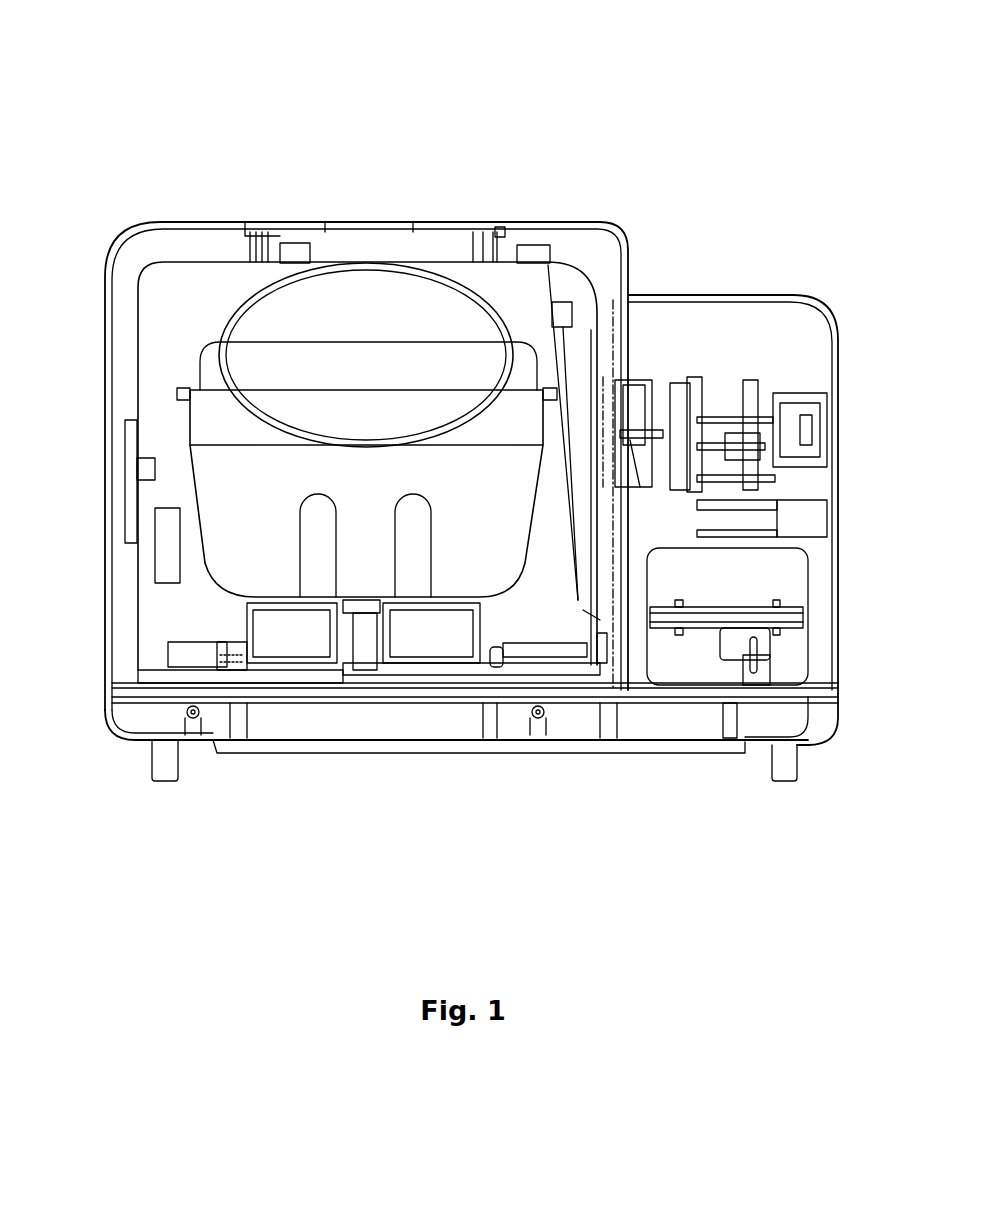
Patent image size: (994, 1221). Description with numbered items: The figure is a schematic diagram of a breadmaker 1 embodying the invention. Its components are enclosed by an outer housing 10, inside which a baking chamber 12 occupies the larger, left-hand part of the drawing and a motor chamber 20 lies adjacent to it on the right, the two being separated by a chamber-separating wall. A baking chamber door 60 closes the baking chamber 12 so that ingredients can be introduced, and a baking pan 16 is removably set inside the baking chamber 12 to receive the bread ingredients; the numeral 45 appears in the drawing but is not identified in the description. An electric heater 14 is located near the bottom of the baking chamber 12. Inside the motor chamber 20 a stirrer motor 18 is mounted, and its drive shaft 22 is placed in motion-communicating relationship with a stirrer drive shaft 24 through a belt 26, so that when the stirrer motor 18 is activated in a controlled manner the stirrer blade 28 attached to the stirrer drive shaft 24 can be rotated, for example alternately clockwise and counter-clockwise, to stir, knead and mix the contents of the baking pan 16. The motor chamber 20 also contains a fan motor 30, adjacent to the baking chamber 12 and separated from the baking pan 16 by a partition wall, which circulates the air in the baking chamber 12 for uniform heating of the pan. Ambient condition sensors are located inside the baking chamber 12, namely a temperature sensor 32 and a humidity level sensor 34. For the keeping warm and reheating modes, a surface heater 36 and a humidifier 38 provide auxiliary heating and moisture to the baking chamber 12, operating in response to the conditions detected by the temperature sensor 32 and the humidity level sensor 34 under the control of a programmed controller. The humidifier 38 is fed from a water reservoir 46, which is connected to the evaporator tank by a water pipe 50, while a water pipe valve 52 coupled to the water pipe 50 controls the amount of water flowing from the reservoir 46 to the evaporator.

The breadmaker 1 is at (688, 90).
The outer housing 10 is at (628, 228).
The baking chamber 12 is at (160, 265).
The electric heater 14 is at (540, 657).
The baking pan 16 is at (217, 587).
The stirrer motor 18 is at (803, 613).
The motor chamber 20 is at (828, 562).
The drive shaft 22 is at (743, 718).
The stirrer drive shaft 24 is at (335, 680).
The belt 26 is at (513, 723).
The stirrer blade 28 is at (305, 533).
The fan motor 30 is at (712, 383).
The temperature sensor 32 is at (145, 473).
The humidity level sensor 34 is at (155, 565).
The surface heater 36 is at (130, 468).
The humidifier 38 is at (600, 620).
The lid 45 is at (325, 227).
The water reservoir 46 is at (552, 243).
The water pipe 50 is at (567, 373).
The water pipe valve 52 is at (574, 303).
The baking chamber door 60 is at (172, 222).